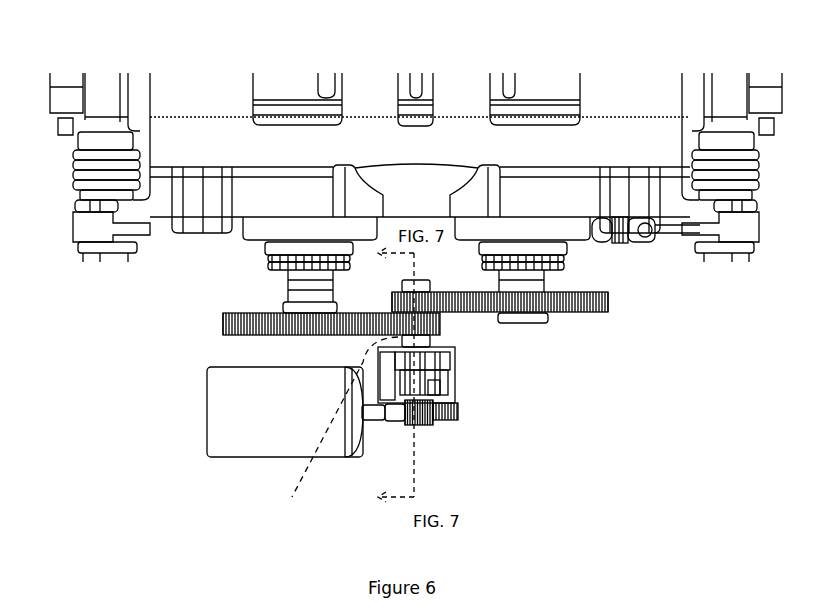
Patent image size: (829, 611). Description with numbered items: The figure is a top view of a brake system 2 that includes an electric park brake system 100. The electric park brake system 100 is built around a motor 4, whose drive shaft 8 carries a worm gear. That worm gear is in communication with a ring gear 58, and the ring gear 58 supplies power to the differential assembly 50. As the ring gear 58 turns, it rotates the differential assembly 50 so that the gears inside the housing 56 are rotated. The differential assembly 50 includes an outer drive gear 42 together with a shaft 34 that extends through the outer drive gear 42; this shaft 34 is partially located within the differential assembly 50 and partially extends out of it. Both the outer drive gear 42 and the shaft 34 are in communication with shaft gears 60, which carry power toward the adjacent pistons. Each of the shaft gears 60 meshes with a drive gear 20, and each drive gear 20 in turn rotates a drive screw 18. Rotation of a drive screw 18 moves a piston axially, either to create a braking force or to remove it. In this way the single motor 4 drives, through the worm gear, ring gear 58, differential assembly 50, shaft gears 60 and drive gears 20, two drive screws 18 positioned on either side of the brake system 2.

The brake system 2 is at (139, 47).
The drive screw 18 is at (265, 252).
The drive gear 20 is at (228, 326).
The shaft 34 is at (443, 313).
The shaft gears 60 is at (425, 253).
The electric park brake system 100 is at (146, 408).
The motor 4 is at (240, 432).
The outer drive gear 42 is at (344, 426).
The housing 56 is at (450, 398).
The ring gear 58 is at (457, 418).
The drive shaft 8 is at (440, 429).
The differential assembly 50 is at (471, 440).